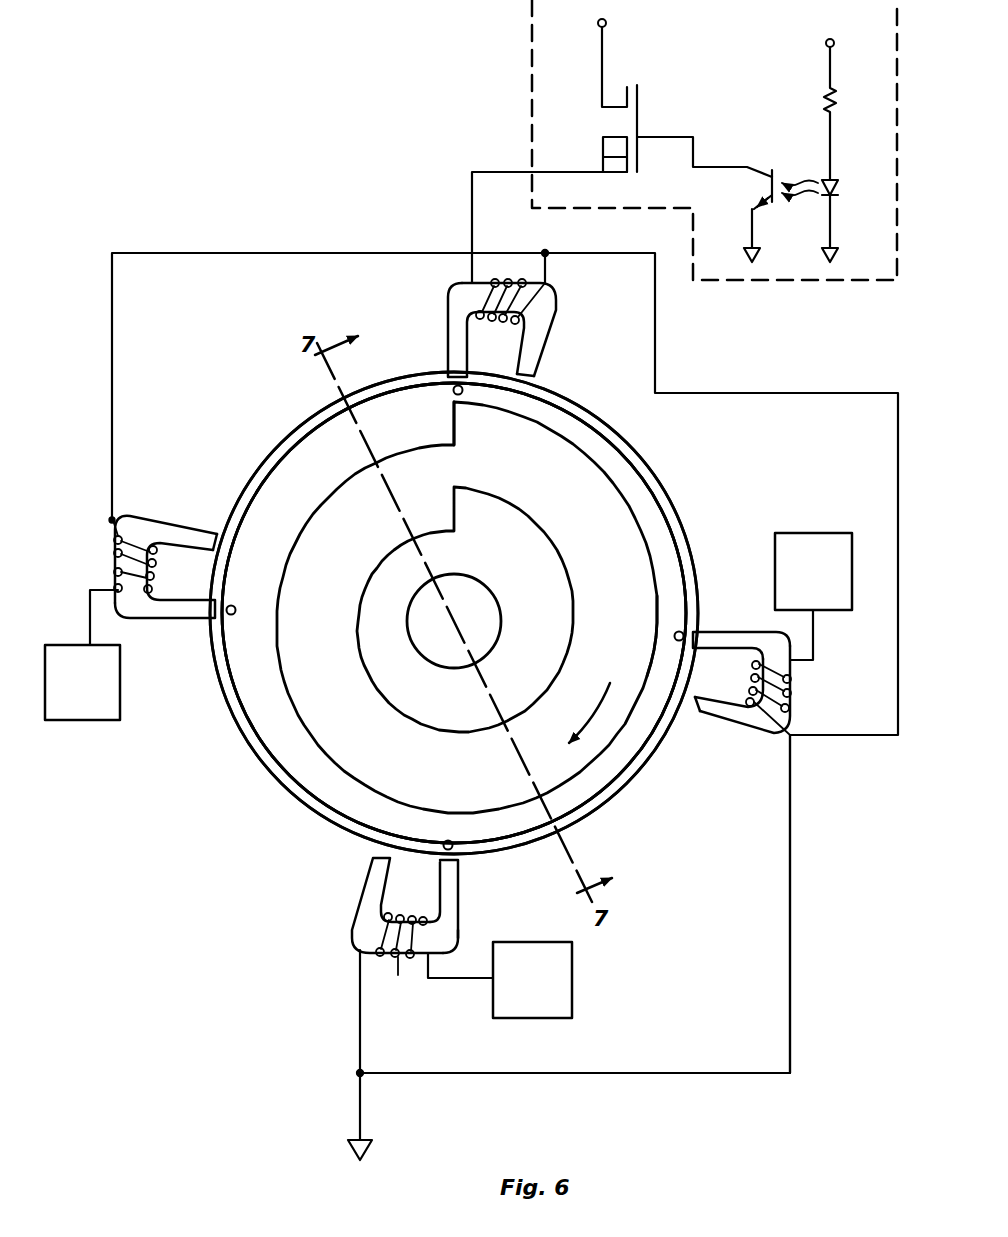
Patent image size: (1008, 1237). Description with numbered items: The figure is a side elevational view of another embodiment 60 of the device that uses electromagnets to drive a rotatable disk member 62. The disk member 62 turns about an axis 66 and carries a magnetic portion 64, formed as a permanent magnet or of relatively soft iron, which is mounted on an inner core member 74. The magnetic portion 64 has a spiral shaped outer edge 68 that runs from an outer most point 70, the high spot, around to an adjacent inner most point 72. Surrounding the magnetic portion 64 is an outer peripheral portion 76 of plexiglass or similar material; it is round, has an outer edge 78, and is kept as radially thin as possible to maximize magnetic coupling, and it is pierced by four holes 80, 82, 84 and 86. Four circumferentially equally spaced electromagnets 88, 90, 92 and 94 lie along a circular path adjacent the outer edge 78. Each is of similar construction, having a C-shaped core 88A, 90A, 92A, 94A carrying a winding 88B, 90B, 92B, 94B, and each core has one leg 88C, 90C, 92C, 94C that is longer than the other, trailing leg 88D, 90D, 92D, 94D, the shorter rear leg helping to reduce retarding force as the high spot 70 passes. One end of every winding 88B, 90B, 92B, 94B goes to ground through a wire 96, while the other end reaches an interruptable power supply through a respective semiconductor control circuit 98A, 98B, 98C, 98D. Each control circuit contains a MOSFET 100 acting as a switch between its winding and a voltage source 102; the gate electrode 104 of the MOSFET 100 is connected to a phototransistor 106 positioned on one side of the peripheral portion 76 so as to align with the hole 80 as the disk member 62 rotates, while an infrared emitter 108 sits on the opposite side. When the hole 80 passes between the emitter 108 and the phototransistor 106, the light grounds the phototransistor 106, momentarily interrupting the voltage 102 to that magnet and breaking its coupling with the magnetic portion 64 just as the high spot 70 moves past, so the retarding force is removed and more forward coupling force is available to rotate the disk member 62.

The embodiment of the device 60 is at (752, 468).
The rotatable disk member 62 is at (692, 518).
The magnetic portion 64 is at (614, 516).
The axis 66 is at (460, 622).
The spiral shaped outer edge 68 is at (657, 568).
The outer most point 70 is at (478, 403).
The inner most point 72 is at (451, 445).
The inner core member 74 is at (553, 576).
The outer peripheral portion 76 is at (298, 770).
The outer edge 78 is at (622, 432).
The hole 80 is at (453, 388).
The hole 82 is at (674, 636).
The hole 84 is at (447, 840).
The hole 86 is at (236, 610).
The electromagnet 88 is at (513, 321).
The C-shaped core 88A is at (545, 345).
The winding 88B is at (541, 284).
The longer leg 88C is at (452, 345).
The shorter leg 88D is at (537, 377).
The electromagnet 90 is at (772, 686).
The C-shaped core 90A is at (774, 741).
The winding 90B is at (792, 690).
The longer leg 90C is at (718, 630).
The shorter leg 90D is at (698, 722).
The electromagnet 92 is at (432, 927).
The C-shaped core 92A is at (458, 934).
The winding 92B is at (398, 975).
The longer leg 92C is at (462, 870).
The shorter leg 92D is at (370, 866).
The electromagnet 94 is at (176, 564).
The C-shaped core 94A is at (180, 530).
The winding 94B is at (115, 553).
The longer leg 94C is at (197, 618).
The shorter leg 94D is at (216, 548).
The wire 96 is at (792, 1000).
The semiconductor control circuit 98A is at (714, 169).
The semiconductor control circuit 98B is at (829, 531).
The semiconductor control circuit 98C is at (576, 990).
The semiconductor control circuit 98D is at (85, 735).
The MOSFET 100 is at (600, 125).
The voltage source 102 is at (608, 23).
The gate electrode 104 is at (641, 115).
The phototransistor 106 is at (768, 214).
The infrared emitter 108 is at (842, 182).